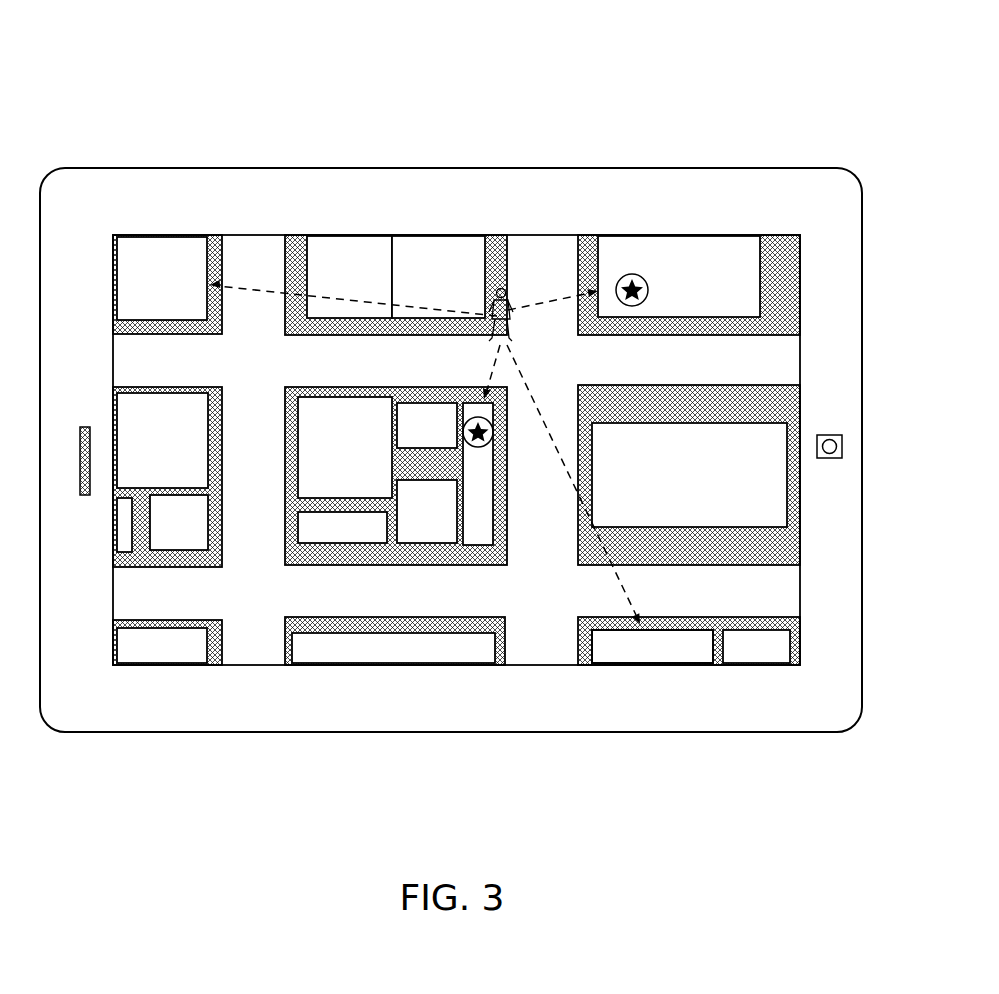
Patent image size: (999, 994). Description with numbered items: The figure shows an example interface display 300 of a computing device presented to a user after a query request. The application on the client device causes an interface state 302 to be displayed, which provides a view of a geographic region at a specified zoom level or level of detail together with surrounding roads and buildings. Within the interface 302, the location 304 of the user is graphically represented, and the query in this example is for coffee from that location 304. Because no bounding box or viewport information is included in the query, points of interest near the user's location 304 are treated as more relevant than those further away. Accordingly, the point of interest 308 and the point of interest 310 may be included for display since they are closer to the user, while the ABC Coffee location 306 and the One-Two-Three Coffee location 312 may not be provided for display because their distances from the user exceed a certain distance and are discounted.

The interface display 300 is at (934, 110).
The interface state 302 is at (586, 230).
The location of a user 304 is at (504, 289).
The point of interest 306 is at (167, 284).
The point of interest 308 is at (632, 277).
The point of interest 310 is at (471, 446).
The point of interest 312 is at (641, 665).